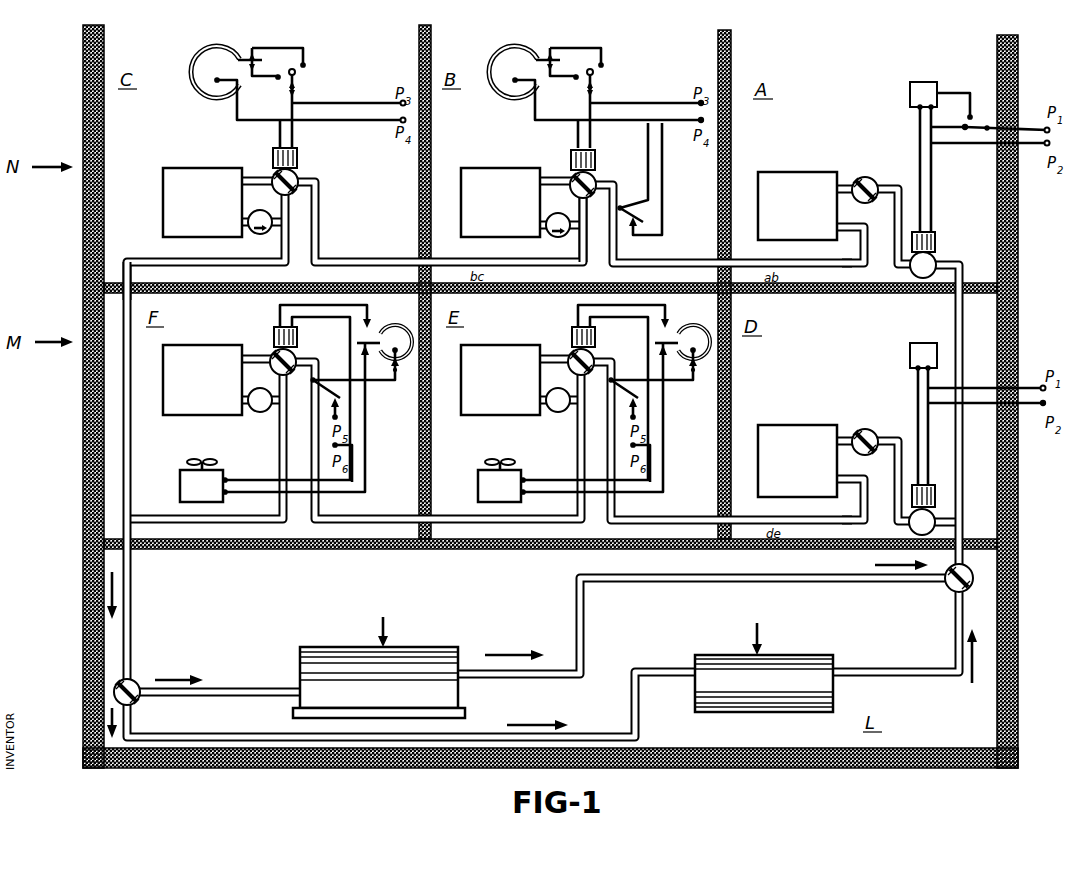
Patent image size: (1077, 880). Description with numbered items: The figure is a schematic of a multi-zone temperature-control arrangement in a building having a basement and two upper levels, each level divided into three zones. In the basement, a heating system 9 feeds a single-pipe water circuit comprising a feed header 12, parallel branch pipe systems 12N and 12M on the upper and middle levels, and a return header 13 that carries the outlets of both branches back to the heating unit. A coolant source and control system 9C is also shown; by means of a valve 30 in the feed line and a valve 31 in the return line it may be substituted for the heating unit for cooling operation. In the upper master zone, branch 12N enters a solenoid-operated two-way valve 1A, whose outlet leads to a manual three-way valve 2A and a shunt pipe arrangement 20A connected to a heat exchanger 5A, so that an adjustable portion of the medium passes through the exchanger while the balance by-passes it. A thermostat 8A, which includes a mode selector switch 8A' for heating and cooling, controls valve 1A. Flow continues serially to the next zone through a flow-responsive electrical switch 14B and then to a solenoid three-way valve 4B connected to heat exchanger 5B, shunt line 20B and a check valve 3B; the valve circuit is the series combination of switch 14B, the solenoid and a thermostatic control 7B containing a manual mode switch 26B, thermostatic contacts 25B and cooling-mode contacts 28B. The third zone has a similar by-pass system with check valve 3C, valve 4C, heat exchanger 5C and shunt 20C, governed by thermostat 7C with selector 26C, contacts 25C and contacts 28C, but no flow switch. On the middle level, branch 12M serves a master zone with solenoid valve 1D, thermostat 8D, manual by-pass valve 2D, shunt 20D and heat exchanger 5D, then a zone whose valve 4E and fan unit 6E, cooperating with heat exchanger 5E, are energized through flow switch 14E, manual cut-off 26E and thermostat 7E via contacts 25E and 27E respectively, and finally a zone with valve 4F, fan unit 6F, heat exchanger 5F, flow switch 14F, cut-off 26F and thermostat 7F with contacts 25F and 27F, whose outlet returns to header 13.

The thermostatic control 7C is at (230, 33).
The thermostatic contacts 25C is at (247, 50).
The thermostatic contacts 28C is at (250, 66).
The mode selector 26C is at (299, 88).
The shunt line 20C is at (281, 203).
The 3-way valve 4C is at (300, 174).
The heat exchanger 5C is at (216, 207).
The check valve 3C is at (267, 235).
The thermostatic control 7B is at (528, 33).
The thermostatic contacts 25B is at (543, 50).
The thermostatic contacts 28B is at (548, 66).
The manual mode switch 26B is at (597, 90).
The shunt line 20B is at (578, 203).
The 3-way valve 4B is at (598, 176).
The heat exchanger 5B is at (514, 207).
The check valve 3B is at (565, 238).
The flow responsive electrical switch 14B is at (650, 218).
The thermostat 8A is at (963, 157).
The mode selector switch 8A' is at (998, 143).
The 3-way manual valve 2A is at (866, 177).
The heat exchanger 5A is at (811, 217).
The shunt pipe arrangement 20A is at (859, 215).
The solenoid operated 2-way valve 1A is at (910, 274).
The branch pipe system 12N is at (986, 247).
The 3-way valve 4F is at (273, 350).
The flow responsive switch 14F is at (327, 377).
The thermostatic contacts 25F is at (371, 330).
The thermostat 7F is at (389, 327).
The thermostatic contacts 27F is at (356, 364).
The manual cut-off 26F is at (393, 383).
The heat exchanger 5F is at (214, 389).
The fan unit 6F is at (209, 496).
The 3-way valve 4E is at (571, 350).
The flow responsive switch 14E is at (625, 377).
The thermostatic contacts 25E is at (669, 330).
The thermostat 7E is at (687, 327).
The thermostatic contacts 27E is at (654, 364).
The manual cut-off 26E is at (691, 383).
The heat exchanger 5E is at (512, 389).
The fan unit 6E is at (507, 496).
The thermostat 8D is at (910, 355).
The by-pass valve 2D is at (868, 430).
The heat exchanger 5D is at (811, 471).
The shunt pipe 20D is at (858, 472).
The solenoid valve 1D is at (910, 531).
The branch piping 12M is at (805, 534).
The return header 13 is at (133, 572).
The valve 31 is at (140, 702).
The heating system 9 is at (390, 703).
The feed header 12 is at (748, 584).
The coolant source and control system 9C is at (775, 692).
The valve 30 is at (967, 588).